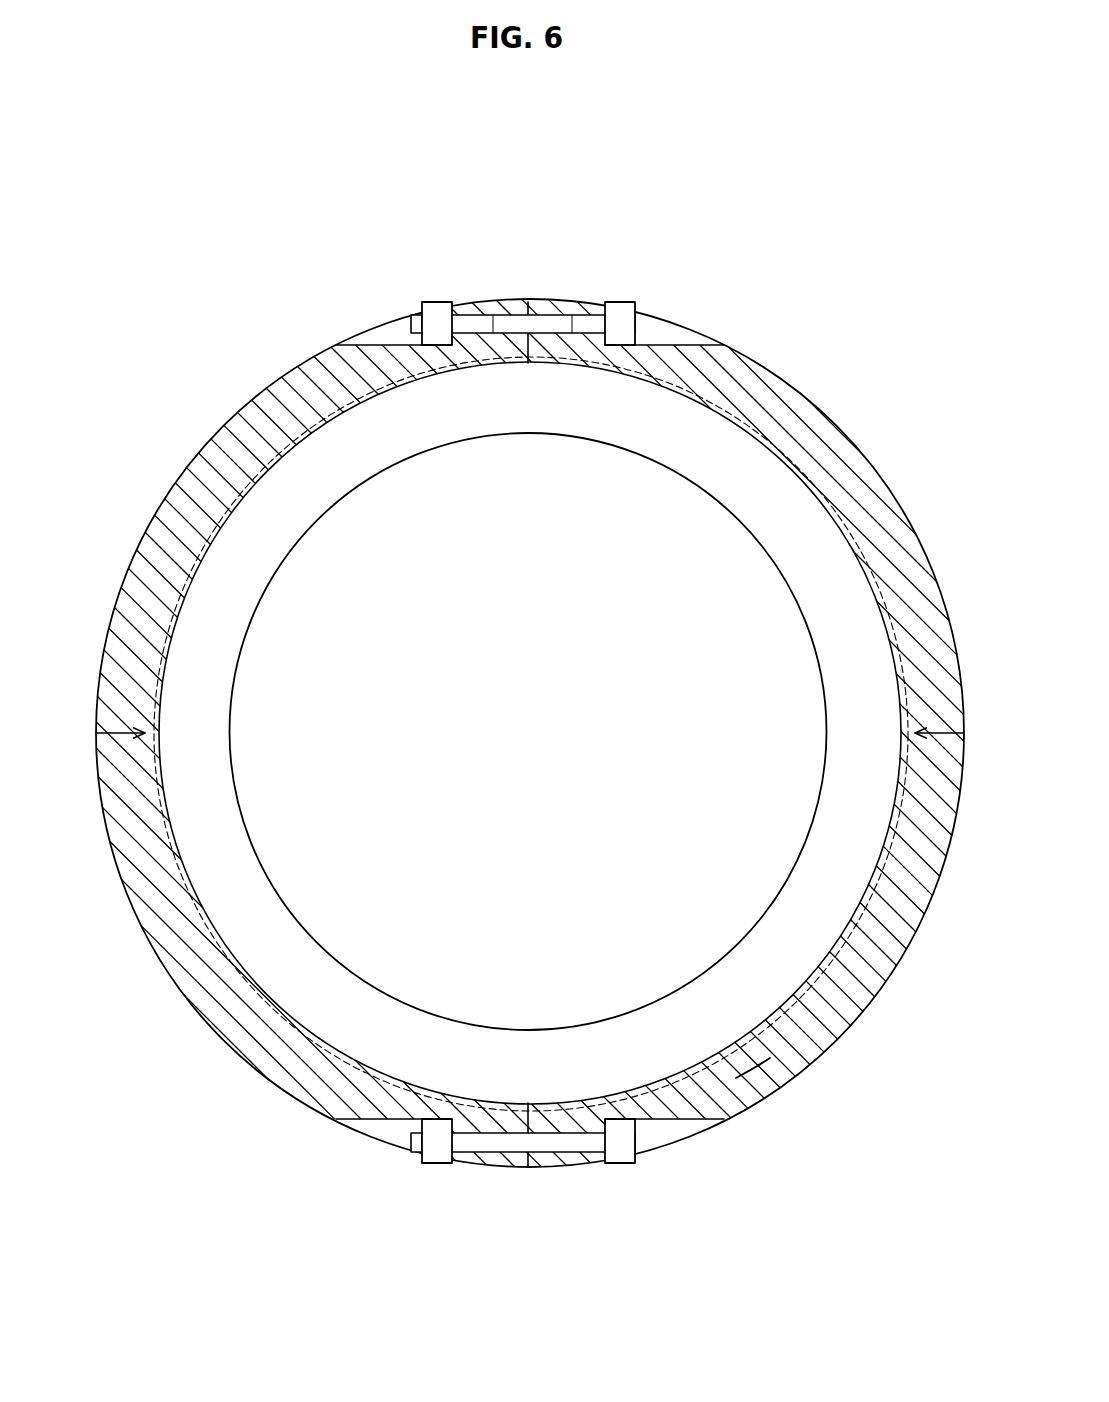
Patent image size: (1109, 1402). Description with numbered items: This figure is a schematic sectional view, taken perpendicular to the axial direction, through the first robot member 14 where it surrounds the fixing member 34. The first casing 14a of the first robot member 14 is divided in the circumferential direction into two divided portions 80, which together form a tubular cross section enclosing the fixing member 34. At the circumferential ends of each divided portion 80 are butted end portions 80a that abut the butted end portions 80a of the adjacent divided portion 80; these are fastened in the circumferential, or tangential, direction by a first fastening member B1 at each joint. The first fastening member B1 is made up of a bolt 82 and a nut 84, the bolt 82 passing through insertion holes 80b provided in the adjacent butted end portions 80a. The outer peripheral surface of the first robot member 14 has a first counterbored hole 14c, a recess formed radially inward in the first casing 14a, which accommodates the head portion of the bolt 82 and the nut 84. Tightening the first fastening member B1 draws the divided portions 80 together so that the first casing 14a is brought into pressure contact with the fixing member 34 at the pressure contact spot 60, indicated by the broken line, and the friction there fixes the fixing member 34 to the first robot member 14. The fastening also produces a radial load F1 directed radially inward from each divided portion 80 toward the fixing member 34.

The first robot member 14 is at (832, 1084).
The first casing 14a is at (752, 1082).
The first counterbored hole 14c is at (385, 332).
The fixing member 34 is at (757, 892).
The pressure contact spot 60 is at (830, 962).
The divided portion 80 is at (282, 402).
The butted end portion 80a is at (483, 302).
The insertion hole 80b is at (493, 315).
The bolt 82 is at (645, 322).
The nut 84 is at (437, 301).
The first fastening member B1 is at (610, 302).
The radial load F1 is at (121, 735).